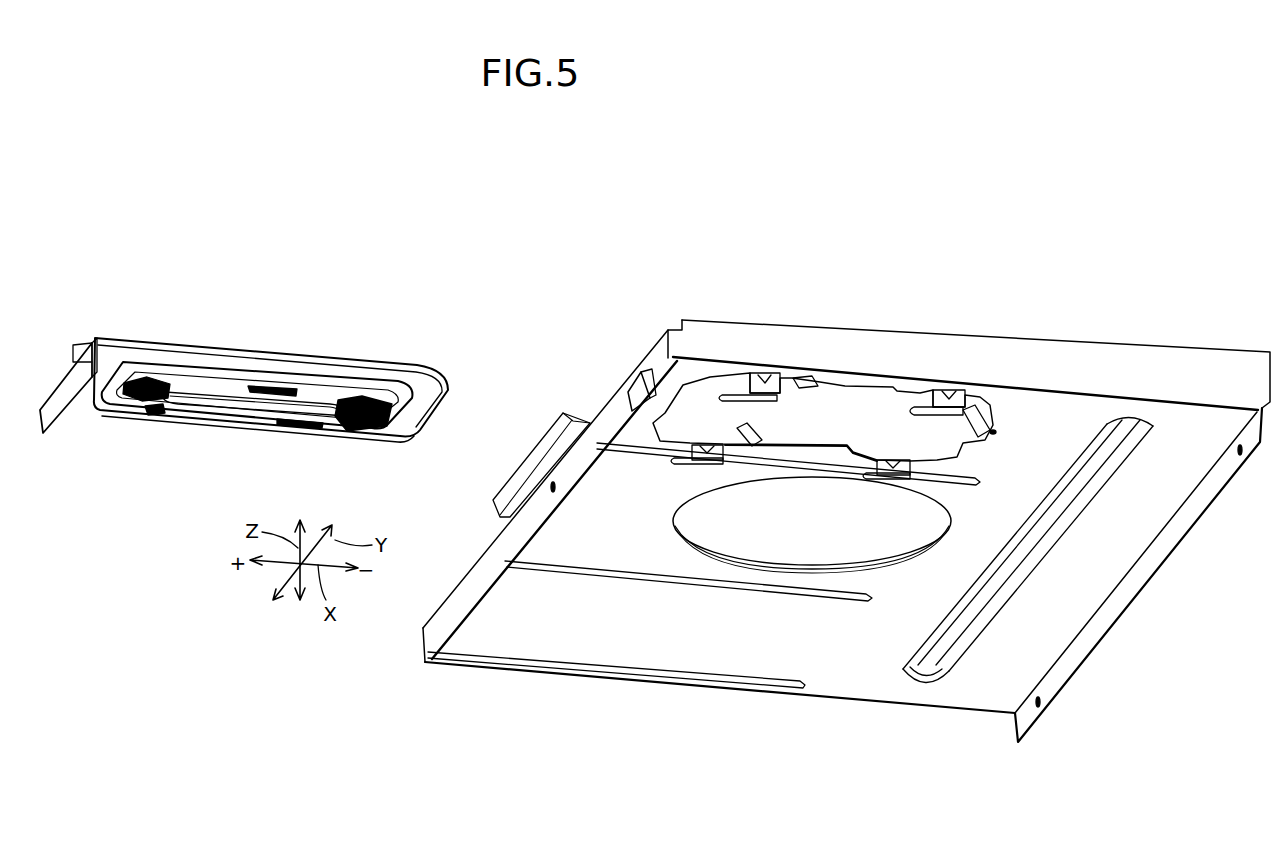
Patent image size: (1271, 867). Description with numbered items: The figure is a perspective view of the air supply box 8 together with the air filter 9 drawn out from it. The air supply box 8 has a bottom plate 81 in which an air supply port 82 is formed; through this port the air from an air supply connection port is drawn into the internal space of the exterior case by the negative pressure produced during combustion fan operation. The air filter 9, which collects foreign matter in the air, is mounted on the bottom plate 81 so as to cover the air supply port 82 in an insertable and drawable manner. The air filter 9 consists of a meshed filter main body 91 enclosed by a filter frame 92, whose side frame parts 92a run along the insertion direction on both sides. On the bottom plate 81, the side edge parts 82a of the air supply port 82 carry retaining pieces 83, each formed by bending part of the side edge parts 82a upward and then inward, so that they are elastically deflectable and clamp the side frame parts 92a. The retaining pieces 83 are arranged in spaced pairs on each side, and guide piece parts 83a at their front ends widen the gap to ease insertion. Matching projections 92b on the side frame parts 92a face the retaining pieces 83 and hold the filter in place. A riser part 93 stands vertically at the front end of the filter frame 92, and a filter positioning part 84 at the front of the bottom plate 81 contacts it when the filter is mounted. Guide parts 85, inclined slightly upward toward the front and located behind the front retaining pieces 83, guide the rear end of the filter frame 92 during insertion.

The air supply box 8 is at (769, 319).
The bottom plate 81 is at (646, 635).
The air supply port 82 is at (877, 434).
The air-supply-port side edge parts 82a is at (847, 388).
The retaining pieces 83 is at (760, 396).
The guide piece parts 83a is at (730, 397).
The filter positioning part 84 is at (636, 393).
The guide parts 85 is at (795, 383).
The air filter 9 is at (128, 330).
The filter main body 91 is at (273, 419).
The filter frame 92 is at (87, 407).
The side frame parts 92a is at (220, 438).
The projections 92b is at (162, 405).
The riser part 93 is at (72, 358).